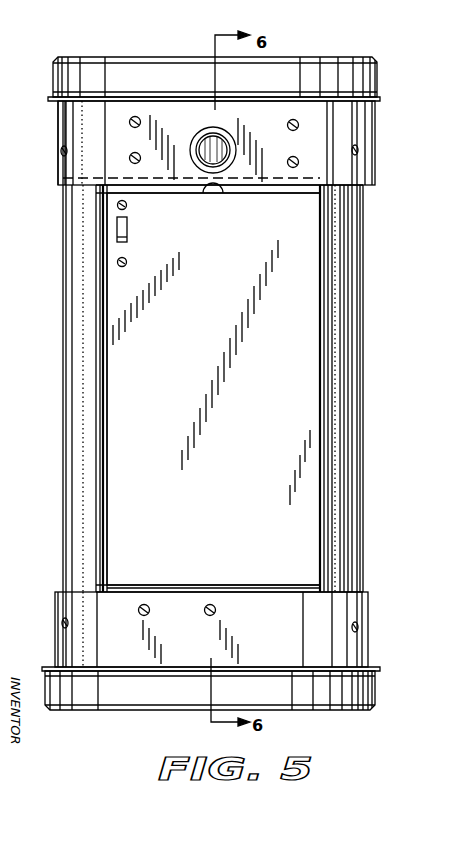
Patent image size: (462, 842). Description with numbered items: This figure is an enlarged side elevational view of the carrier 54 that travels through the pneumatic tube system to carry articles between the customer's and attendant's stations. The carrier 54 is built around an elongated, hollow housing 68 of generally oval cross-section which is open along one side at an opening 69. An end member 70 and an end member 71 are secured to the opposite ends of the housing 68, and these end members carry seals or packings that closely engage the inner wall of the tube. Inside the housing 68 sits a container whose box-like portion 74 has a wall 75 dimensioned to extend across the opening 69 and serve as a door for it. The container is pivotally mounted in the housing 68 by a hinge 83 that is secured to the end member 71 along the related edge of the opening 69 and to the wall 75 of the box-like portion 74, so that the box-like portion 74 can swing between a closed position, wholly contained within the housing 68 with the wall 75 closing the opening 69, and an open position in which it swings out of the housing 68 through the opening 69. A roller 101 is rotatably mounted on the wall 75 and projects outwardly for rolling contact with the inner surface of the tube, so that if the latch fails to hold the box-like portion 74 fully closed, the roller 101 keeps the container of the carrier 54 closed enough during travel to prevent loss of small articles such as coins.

The carrier 54 is at (383, 268).
The housing 68 is at (78, 253).
The opening 69 is at (328, 223).
The end member 70 is at (370, 132).
The end member 71 is at (352, 612).
The box-like portion 74 is at (312, 462).
The wall 75 is at (292, 322).
The hinge 83 is at (307, 592).
The roller 101 is at (117, 228).